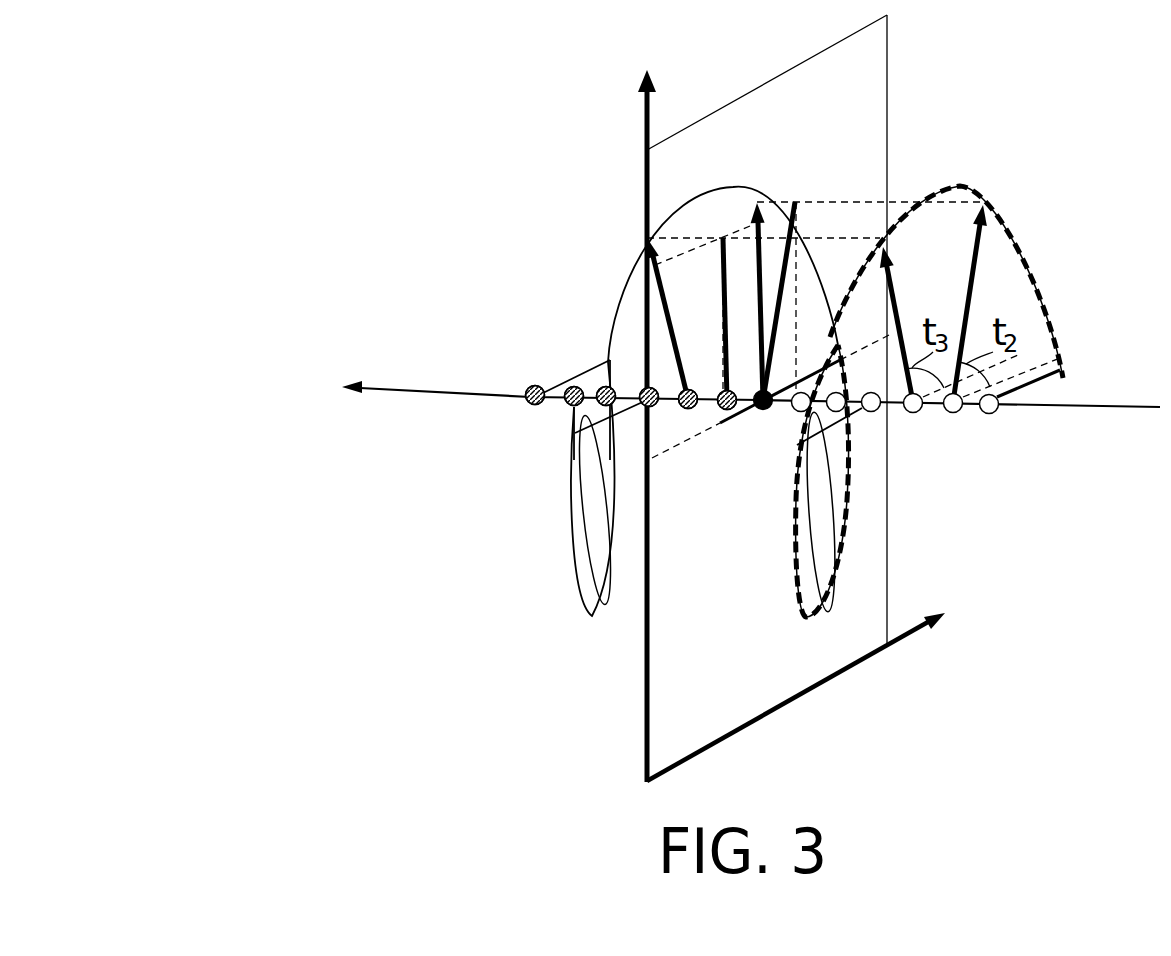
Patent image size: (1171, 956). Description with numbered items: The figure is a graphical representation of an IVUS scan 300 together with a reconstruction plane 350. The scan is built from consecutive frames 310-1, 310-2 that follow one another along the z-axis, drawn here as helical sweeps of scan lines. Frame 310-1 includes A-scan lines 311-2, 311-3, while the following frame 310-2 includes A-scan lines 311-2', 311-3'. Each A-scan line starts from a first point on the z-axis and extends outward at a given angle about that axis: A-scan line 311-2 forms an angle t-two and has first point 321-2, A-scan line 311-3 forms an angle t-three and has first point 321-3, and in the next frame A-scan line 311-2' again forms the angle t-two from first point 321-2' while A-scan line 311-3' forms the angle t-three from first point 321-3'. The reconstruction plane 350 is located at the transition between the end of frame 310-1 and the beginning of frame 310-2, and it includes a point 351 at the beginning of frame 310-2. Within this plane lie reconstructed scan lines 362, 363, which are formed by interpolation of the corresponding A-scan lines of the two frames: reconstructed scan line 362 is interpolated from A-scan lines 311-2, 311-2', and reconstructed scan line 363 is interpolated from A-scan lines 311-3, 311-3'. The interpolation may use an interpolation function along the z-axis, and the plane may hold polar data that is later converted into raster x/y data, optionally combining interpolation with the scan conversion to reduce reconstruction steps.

The IVUS scan 300 is at (403, 87).
The reconstruction plane 350 is at (860, 138).
The frame 310-1 is at (967, 189).
The frame 310-2 is at (619, 297).
The A-scan line 311-2 is at (948, 303).
The A-scan line 311-3 is at (919, 324).
The A-scan line 311-2' is at (792, 279).
The A-scan line 311-3' is at (687, 303).
The first point 321-2 is at (994, 428).
The first point 321-3 is at (931, 435).
The first point 321-2' is at (714, 449).
The first point 321-3' is at (694, 468).
The point 351 is at (764, 411).
The reconstructed scan line 362 is at (794, 258).
The reconstructed scan line 363 is at (722, 273).